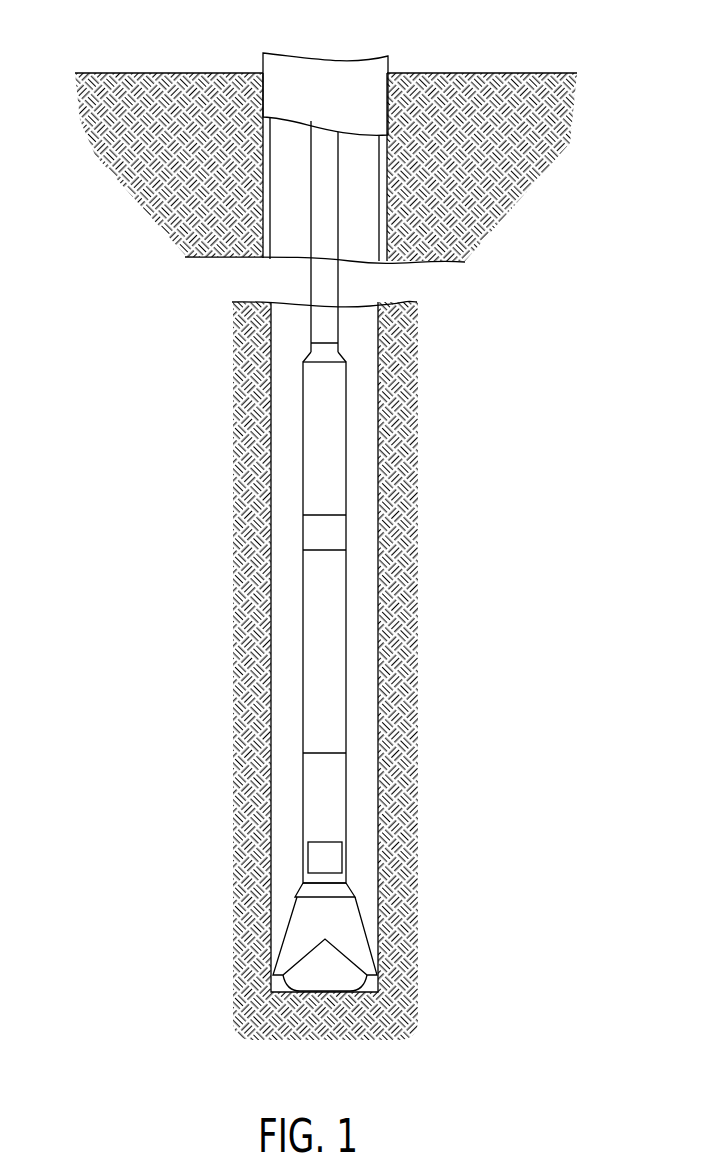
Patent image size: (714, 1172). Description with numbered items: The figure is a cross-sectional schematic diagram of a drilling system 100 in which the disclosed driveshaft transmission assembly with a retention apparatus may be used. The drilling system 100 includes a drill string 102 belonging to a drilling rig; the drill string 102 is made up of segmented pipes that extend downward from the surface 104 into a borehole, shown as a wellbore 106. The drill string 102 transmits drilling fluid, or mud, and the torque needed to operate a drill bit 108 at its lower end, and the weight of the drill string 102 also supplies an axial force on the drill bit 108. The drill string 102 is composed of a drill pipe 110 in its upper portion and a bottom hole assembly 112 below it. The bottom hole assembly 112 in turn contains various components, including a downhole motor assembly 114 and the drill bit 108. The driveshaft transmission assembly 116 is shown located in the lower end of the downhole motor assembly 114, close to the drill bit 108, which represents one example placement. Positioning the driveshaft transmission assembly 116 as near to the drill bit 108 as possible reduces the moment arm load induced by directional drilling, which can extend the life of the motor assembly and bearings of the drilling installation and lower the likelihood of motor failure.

The drilling system 100 is at (116, 281).
The drill string 102 is at (358, 168).
The surface 104 is at (518, 95).
The wellbore 106 is at (337, 77).
The drill bit 108 is at (367, 935).
The drill pipe 110 is at (338, 343).
The bottom hole assembly 112 is at (362, 600).
The downhole motor assembly 114 is at (330, 830).
The driveshaft transmission assembly 116 is at (308, 862).